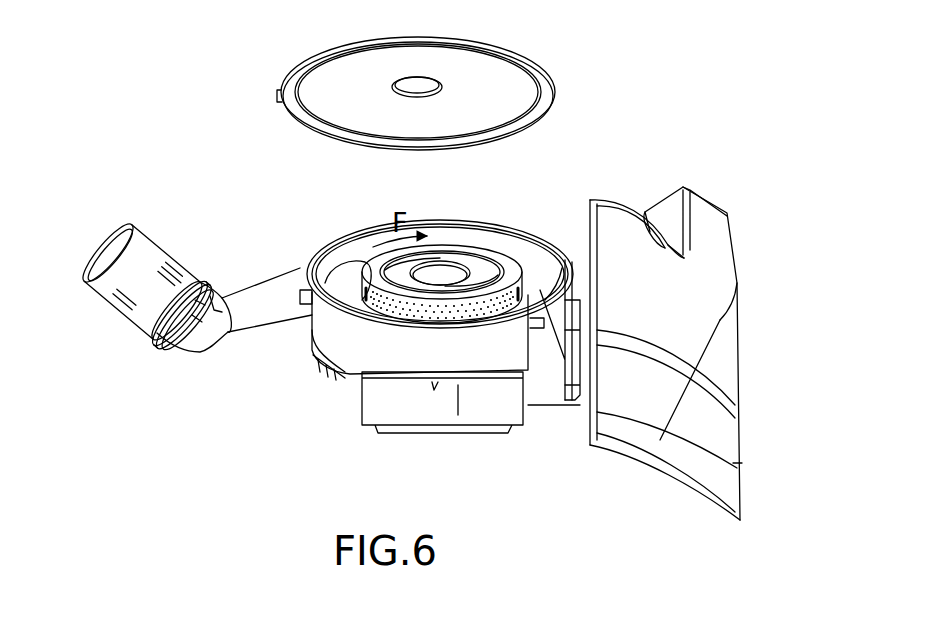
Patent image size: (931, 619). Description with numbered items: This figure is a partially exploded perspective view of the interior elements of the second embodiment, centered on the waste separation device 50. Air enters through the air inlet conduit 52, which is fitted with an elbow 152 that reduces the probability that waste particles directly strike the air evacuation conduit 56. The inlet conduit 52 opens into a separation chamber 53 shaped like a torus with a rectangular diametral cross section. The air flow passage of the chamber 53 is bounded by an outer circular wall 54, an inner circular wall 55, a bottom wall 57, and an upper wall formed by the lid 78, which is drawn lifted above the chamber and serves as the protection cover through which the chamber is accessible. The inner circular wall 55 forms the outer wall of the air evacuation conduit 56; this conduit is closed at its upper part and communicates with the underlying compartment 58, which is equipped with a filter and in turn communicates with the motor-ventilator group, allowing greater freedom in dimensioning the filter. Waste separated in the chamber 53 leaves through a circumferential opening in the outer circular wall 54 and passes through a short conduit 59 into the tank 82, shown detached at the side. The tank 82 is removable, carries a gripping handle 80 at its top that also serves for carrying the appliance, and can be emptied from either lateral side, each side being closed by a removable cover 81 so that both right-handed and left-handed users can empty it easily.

The waste separation device 50 is at (195, 125).
The air inlet conduit 52 is at (250, 300).
The separation chamber 53 is at (500, 239).
The outer circular wall 54 is at (356, 255).
The inner circular wall 55 is at (485, 248).
The air evacuation conduit 56 is at (441, 268).
The bottom wall 57 is at (343, 380).
The compartment 58 is at (428, 410).
The short conduit 59 is at (560, 440).
The lid 78 is at (538, 75).
The gripping handle 80 is at (692, 359).
The removable cover 81 is at (612, 205).
The tank 82 is at (612, 462).
The elbow 152 is at (217, 350).